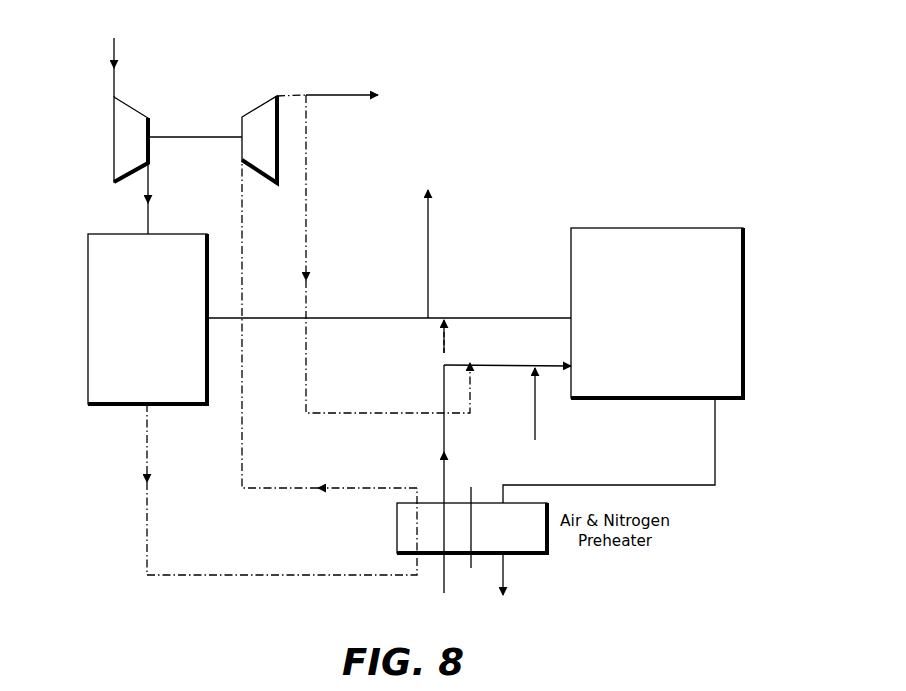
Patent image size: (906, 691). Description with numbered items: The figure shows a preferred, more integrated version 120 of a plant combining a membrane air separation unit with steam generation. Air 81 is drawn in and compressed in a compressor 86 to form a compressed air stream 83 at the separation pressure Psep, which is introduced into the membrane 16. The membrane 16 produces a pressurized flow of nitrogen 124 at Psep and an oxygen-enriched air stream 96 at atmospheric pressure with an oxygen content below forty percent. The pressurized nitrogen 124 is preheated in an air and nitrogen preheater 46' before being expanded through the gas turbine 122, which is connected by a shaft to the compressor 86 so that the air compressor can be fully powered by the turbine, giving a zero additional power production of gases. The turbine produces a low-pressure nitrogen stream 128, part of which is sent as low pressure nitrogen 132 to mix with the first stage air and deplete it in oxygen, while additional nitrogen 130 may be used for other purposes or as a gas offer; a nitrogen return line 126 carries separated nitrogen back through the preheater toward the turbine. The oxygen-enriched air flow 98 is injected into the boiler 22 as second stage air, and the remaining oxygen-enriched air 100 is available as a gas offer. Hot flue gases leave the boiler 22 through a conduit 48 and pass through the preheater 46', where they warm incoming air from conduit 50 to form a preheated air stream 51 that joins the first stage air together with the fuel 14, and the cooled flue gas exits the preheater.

The fuel 14 is at (535, 423).
The membrane 16 is at (88, 292).
The boiler 22 is at (745, 278).
The air and nitrogen preheater 46' is at (523, 586).
The flue gas conduit 48 is at (715, 433).
The incoming air conduit 50 is at (444, 585).
The preheated air stream 51 is at (443, 352).
The air 81 is at (114, 53).
The compressed air stream 83 is at (148, 189).
The compressor 86 is at (114, 122).
The oxygen-enriched air stream 96 is at (218, 315).
The oxygen-enriched air flow 98 is at (470, 317).
The oxygen-enriched air gas offer 100 is at (428, 265).
The integrated plant embodiment 120 is at (624, 64).
The gas turbine 122 is at (252, 108).
The pressurized nitrogen flow 124 is at (147, 505).
The nitrogen return line 126 is at (242, 430).
The low-pressure nitrogen stream 128 is at (285, 95).
The additional nitrogen 130 is at (347, 98).
The low pressure nitrogen stream 132 is at (306, 223).